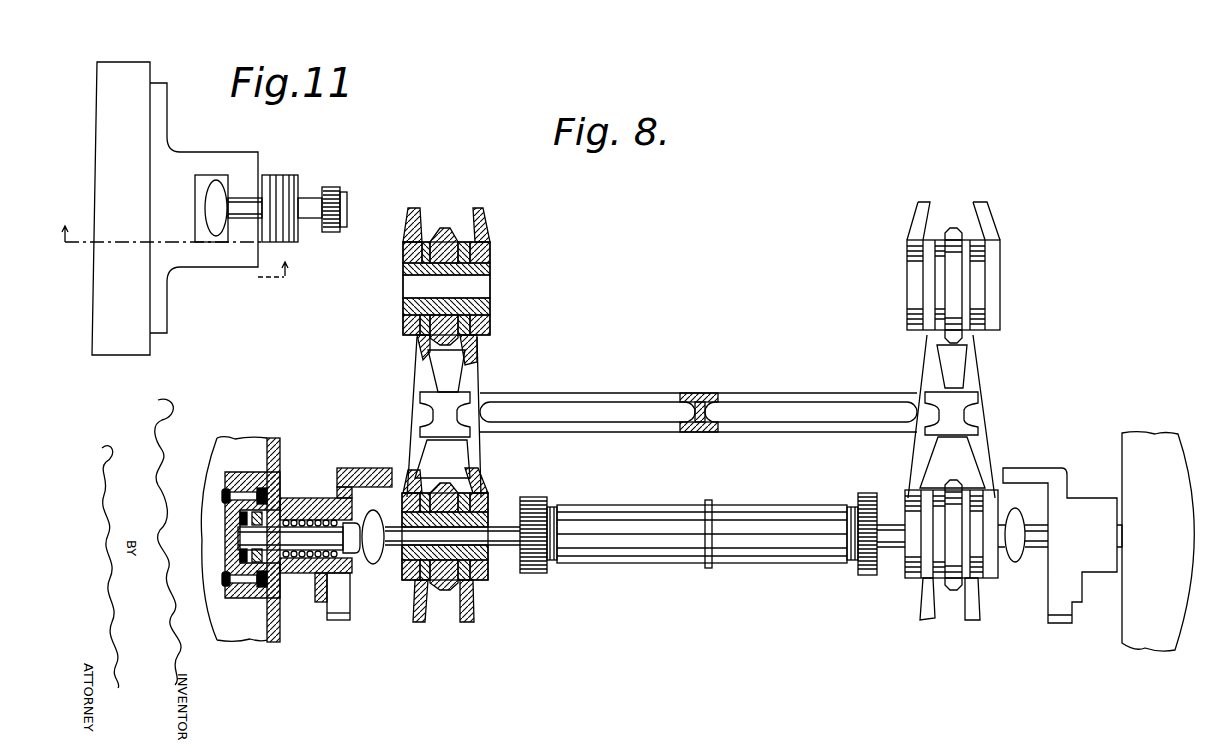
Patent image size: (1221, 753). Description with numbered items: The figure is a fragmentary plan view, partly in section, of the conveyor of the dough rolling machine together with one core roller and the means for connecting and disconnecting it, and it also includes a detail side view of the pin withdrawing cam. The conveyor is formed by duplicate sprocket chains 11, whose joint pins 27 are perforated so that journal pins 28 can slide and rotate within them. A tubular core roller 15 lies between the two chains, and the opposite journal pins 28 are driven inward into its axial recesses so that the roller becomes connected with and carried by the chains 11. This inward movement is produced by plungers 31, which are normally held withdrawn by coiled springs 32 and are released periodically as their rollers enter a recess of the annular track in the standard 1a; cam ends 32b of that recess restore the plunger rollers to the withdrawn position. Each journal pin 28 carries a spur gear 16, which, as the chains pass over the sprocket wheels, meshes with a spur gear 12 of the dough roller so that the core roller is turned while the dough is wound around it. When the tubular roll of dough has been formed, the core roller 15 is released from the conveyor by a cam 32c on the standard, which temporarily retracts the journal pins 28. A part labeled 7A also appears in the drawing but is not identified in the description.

In FIG. 8, the standard 1a is at (249, 450).
In FIG. 11, the wall plate 7A is at (112, 193).
In FIG. 11, the sprocket chain 11 is at (286, 174).
In FIG. 8, the sprocket chain 11 is at (490, 235).
In FIG. 11, the spur gear 12 is at (179, 257).
In FIG. 8, the core roller 15 is at (758, 515).
In FIG. 11, the spur gear 16 is at (336, 196).
In FIG. 8, the joint pin 27 is at (397, 562).
In FIG. 11, the journal pin 28 is at (314, 212).
In FIG. 8, the journal pin 28 is at (512, 555).
In FIG. 8, the plunger 31 is at (356, 556).
In FIG. 8, the coiled spring 32 is at (310, 572).
In FIG. 8, the cam end 32b is at (268, 548).
In FIG. 11, the cam 32c is at (175, 170).